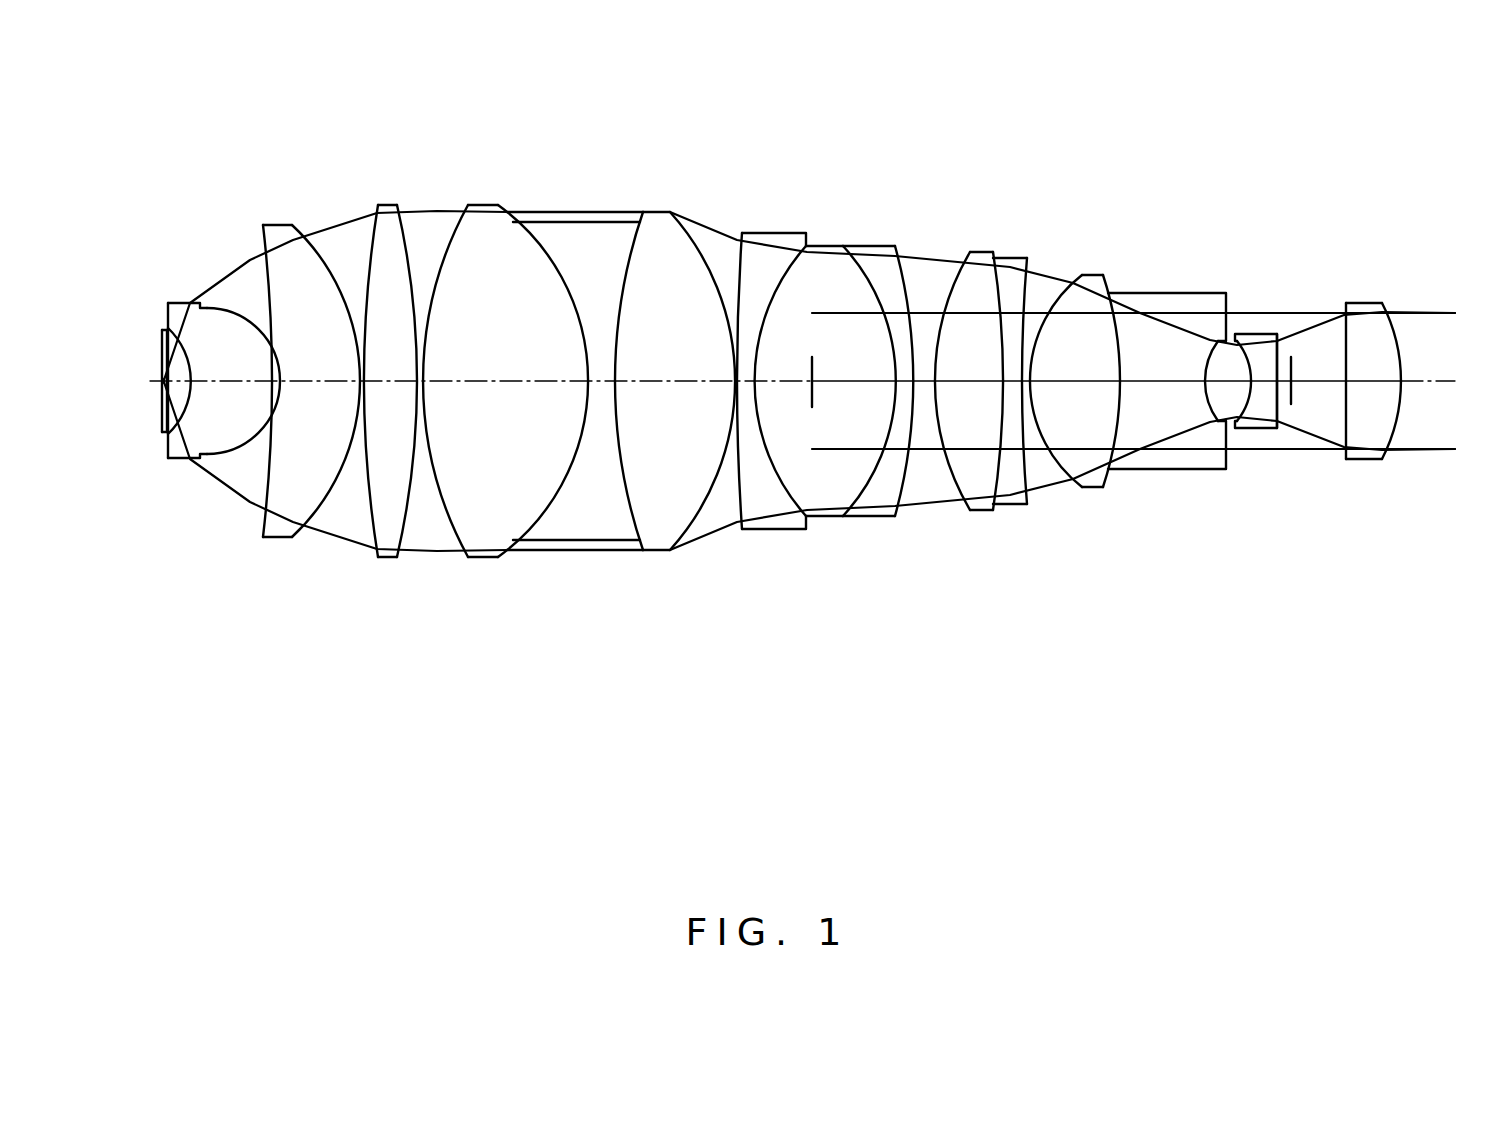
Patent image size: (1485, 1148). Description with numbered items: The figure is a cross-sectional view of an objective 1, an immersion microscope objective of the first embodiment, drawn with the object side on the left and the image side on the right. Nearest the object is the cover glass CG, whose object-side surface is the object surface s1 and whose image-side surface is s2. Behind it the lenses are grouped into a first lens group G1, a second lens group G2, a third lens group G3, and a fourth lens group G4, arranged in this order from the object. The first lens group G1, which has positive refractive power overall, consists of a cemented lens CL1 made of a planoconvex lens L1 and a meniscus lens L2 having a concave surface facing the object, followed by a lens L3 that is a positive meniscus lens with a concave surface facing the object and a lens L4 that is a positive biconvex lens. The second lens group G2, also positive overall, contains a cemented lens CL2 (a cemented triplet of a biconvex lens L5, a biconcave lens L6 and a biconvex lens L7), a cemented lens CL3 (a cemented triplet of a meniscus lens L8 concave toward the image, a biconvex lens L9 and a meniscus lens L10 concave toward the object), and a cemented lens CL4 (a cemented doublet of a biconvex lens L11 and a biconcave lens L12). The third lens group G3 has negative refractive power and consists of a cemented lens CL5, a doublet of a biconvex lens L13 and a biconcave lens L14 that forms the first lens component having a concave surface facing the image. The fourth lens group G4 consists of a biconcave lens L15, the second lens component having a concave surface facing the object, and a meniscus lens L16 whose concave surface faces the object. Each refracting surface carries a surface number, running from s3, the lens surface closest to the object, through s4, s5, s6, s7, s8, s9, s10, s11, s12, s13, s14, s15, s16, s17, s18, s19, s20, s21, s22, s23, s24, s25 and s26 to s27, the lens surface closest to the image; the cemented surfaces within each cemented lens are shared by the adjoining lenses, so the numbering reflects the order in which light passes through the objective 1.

The objective 1 is at (1283, 89).
The cover glass CG is at (147, 428).
The object surface s1 is at (163, 372).
The cover glass image-side surface s2 is at (169, 330).
The object-closest lens surface s3 is at (187, 330).
The surface number s4 is at (205, 330).
The surface number s5 is at (249, 332).
The surface number s6 is at (265, 322).
The surface number s7 is at (332, 277).
The surface number s8 is at (368, 257).
The surface number s9 is at (407, 260).
The surface number s10 is at (455, 247).
The surface number s11 is at (540, 243).
The surface number s12 is at (627, 263).
The surface number s13 is at (700, 247).
The surface number s14 is at (742, 270).
The surface number s15 is at (790, 283).
The surface number s16 is at (851, 281).
The surface number s17 is at (905, 283).
The surface number s18 is at (960, 283).
The surface number s19 is at (997, 278).
The surface number s20 is at (1043, 283).
The surface number s21 is at (1055, 300).
The surface number s22 is at (1113, 330).
The surface number s23 is at (1218, 353).
The surface number s24 is at (1237, 357).
The surface number s25 is at (1281, 361).
The surface number s26 is at (1342, 357).
The image-closest lens surface s27 is at (1401, 357).
The lens L1 is at (201, 419).
The lens L2 is at (243, 396).
The lens L3 is at (311, 395).
The lens L4 is at (399, 379).
The lens L5 is at (505, 371).
The lens L6 is at (575, 373).
The lens L7 is at (689, 373).
The lens L8 is at (769, 377).
The lens L9 is at (840, 382).
The lens L10 is at (894, 378).
The lens L11 is at (987, 387).
The lens L12 is at (1038, 405).
The lens L13 is at (1103, 411).
The lens L14 is at (1167, 439).
The lens L15 is at (1279, 422).
The lens L16 is at (1387, 439).
The cemented lens CL1 is at (224, 423).
The cemented lens CL2 is at (579, 398).
The cemented lens CL3 is at (822, 404).
The cemented lens CL4 is at (1009, 414).
The cemented lens CL5 is at (1128, 438).
The first lens group G1 is at (301, 430).
The second lens group G2 is at (753, 422).
The third lens group G3 is at (1128, 462).
The fourth lens group G4 is at (1333, 473).